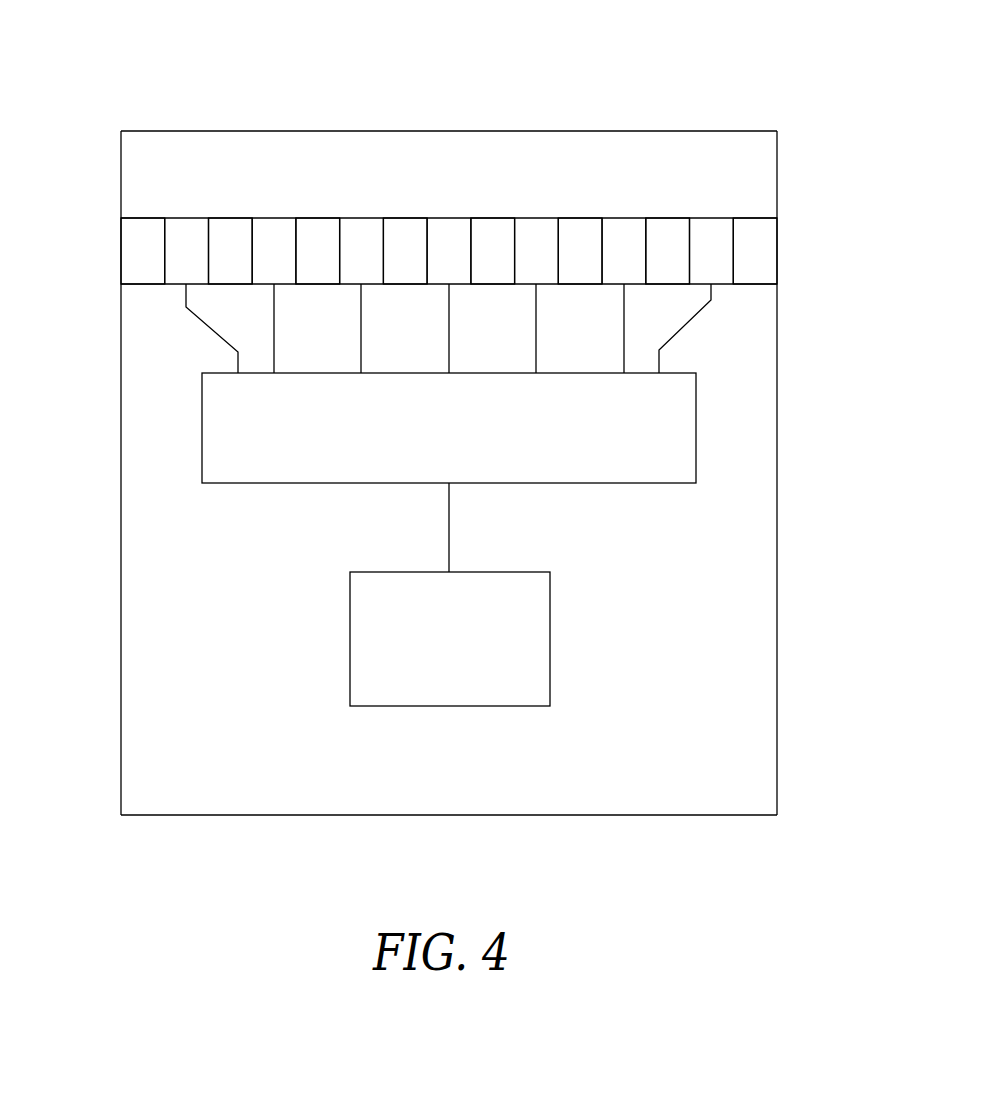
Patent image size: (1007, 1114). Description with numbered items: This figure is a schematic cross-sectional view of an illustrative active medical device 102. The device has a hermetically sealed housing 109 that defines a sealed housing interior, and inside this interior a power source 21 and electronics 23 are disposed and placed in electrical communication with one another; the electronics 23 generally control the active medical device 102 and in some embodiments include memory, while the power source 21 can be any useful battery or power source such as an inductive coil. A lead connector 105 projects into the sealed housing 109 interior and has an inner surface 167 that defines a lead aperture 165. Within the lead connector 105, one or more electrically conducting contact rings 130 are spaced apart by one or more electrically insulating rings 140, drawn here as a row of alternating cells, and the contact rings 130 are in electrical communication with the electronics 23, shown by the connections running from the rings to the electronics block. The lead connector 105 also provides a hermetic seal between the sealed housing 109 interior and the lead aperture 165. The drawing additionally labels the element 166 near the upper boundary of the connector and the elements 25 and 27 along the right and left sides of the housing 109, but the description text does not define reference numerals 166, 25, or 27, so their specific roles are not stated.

The active medical device 102 is at (800, 46).
The lead connector 105 is at (391, 198).
The hermetically sealed housing 109 is at (137, 131).
The electrically conducting contact rings 130 is at (182, 226).
The electrically insulating rings 140 is at (140, 225).
The lead aperture 165 is at (98, 228).
The upper surface 166 is at (121, 266).
The inner surface 167 is at (768, 282).
The electronics 23 is at (210, 426).
The power source 21 is at (452, 707).
The right wall 25 is at (778, 572).
The left wall 27 is at (122, 603).